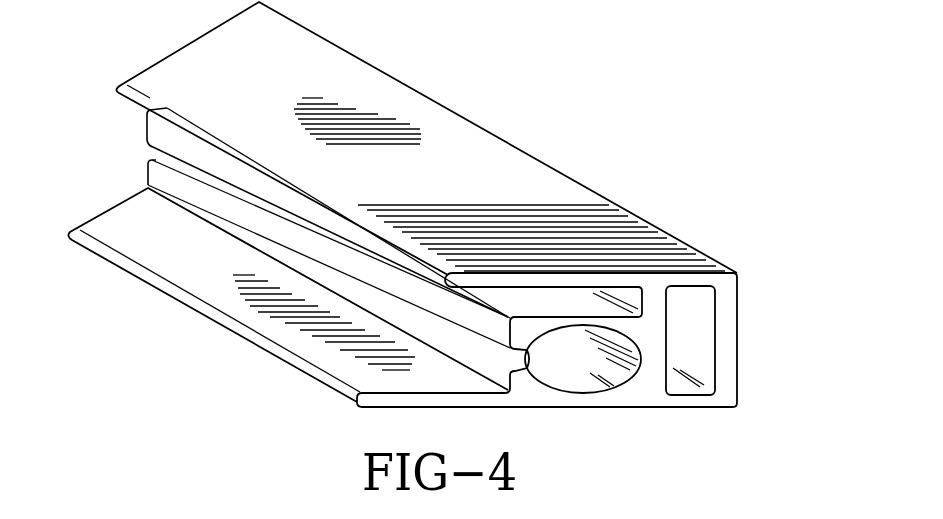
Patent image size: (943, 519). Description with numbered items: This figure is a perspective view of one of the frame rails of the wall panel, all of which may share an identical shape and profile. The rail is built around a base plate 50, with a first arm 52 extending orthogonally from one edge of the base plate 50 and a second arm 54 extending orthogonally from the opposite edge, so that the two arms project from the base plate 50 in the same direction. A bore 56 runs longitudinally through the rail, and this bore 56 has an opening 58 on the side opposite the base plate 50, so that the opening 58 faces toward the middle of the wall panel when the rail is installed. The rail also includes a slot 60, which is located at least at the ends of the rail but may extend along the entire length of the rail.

The base plate 50 is at (727, 388).
The first arm 52 is at (450, 145).
The second arm 54 is at (240, 303).
The bore 56 is at (566, 373).
The opening 58 is at (156, 173).
The slot 60 is at (695, 319).